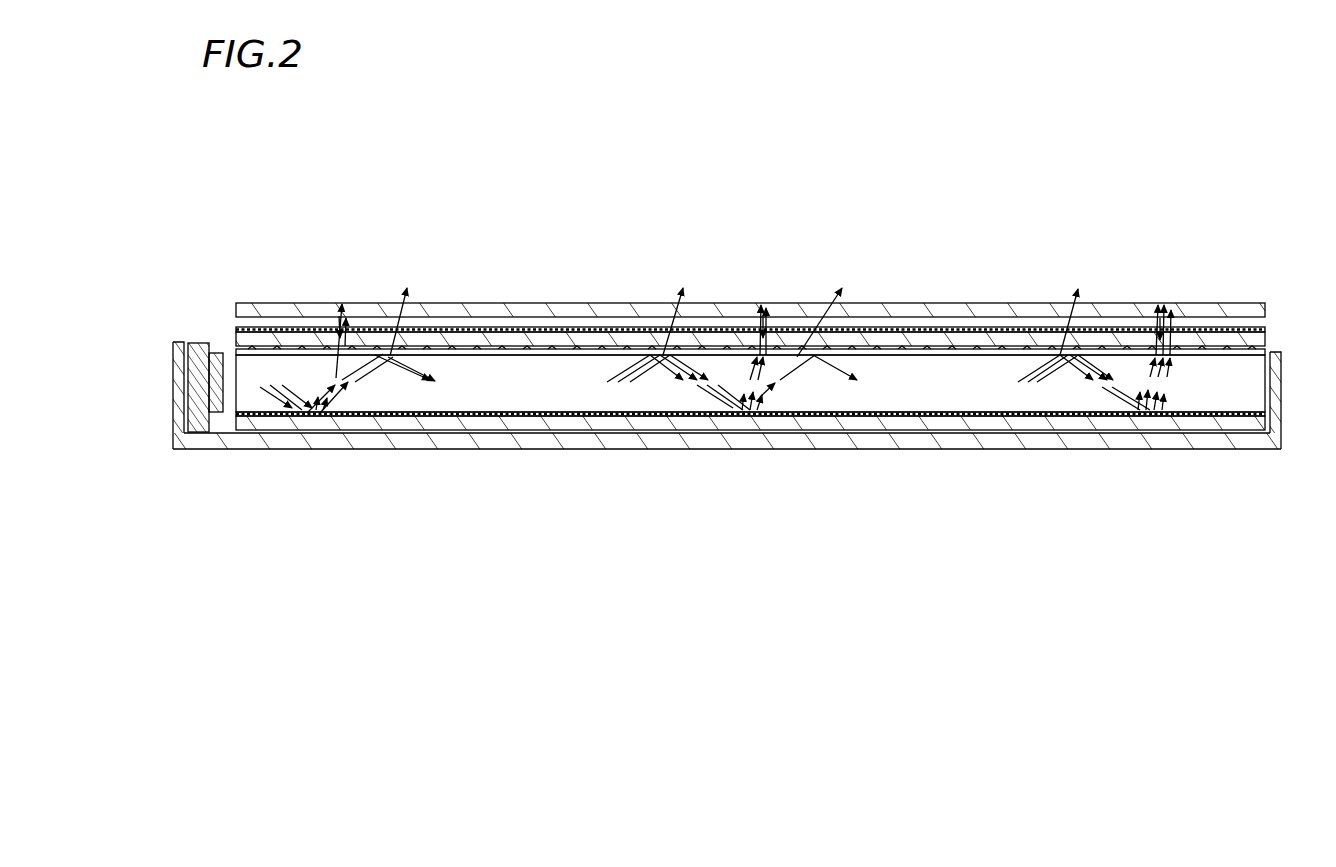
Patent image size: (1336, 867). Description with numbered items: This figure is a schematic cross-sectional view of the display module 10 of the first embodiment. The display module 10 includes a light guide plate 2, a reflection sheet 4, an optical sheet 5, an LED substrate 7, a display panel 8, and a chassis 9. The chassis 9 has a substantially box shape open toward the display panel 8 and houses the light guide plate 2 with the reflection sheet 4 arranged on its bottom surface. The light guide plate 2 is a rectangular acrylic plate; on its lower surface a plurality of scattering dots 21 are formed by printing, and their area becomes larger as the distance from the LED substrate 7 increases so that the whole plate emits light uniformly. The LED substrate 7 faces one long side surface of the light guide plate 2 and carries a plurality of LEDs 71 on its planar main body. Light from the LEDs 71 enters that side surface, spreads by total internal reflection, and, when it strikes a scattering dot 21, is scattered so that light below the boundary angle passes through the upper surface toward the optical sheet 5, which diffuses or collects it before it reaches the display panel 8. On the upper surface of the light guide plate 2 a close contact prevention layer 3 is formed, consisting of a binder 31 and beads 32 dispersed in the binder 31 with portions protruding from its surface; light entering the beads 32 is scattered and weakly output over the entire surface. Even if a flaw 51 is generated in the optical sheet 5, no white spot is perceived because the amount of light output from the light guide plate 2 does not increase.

The display module 10 is at (1193, 90).
The light guide plate 2 is at (1256, 393).
The scattering dot 21 is at (1027, 416).
The close contact prevention layer 3 is at (1269, 349).
The binder 31 is at (1229, 345).
The beads 32 is at (1242, 345).
The reflection sheet 4 is at (1213, 428).
The optical sheet 5 is at (750, 299).
The flaw 51 is at (1045, 273).
The LED substrate 7 is at (196, 340).
The LED 71 is at (220, 352).
The display panel 8 is at (976, 310).
The chassis 9 is at (1140, 448).